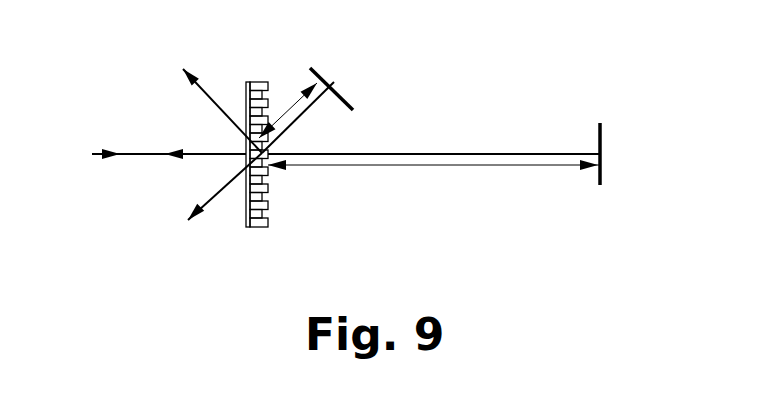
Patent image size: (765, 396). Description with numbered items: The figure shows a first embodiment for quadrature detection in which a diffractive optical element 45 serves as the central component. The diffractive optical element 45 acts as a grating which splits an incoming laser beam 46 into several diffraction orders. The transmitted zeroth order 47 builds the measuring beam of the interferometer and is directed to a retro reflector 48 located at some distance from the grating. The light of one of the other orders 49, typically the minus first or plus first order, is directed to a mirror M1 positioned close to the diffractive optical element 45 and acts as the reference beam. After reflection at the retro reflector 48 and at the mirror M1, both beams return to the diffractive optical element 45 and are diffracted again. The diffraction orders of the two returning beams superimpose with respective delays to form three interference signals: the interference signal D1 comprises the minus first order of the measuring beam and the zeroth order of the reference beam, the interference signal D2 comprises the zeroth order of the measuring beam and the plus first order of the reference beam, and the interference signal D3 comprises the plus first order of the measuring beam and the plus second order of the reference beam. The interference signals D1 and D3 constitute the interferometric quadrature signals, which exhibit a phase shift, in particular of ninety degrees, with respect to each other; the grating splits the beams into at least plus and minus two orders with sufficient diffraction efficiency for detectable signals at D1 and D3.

The diffractive optical element 45 is at (235, 133).
The laser beam 46 is at (147, 134).
The transmitted zeroth order 47 is at (434, 140).
The retro reflector 48 is at (640, 147).
The other order 49 is at (295, 126).
The mirror M1 is at (355, 75).
The interference signal D1 is at (195, 219).
The interference signal D2 is at (178, 180).
The interference signal D3 is at (195, 90).